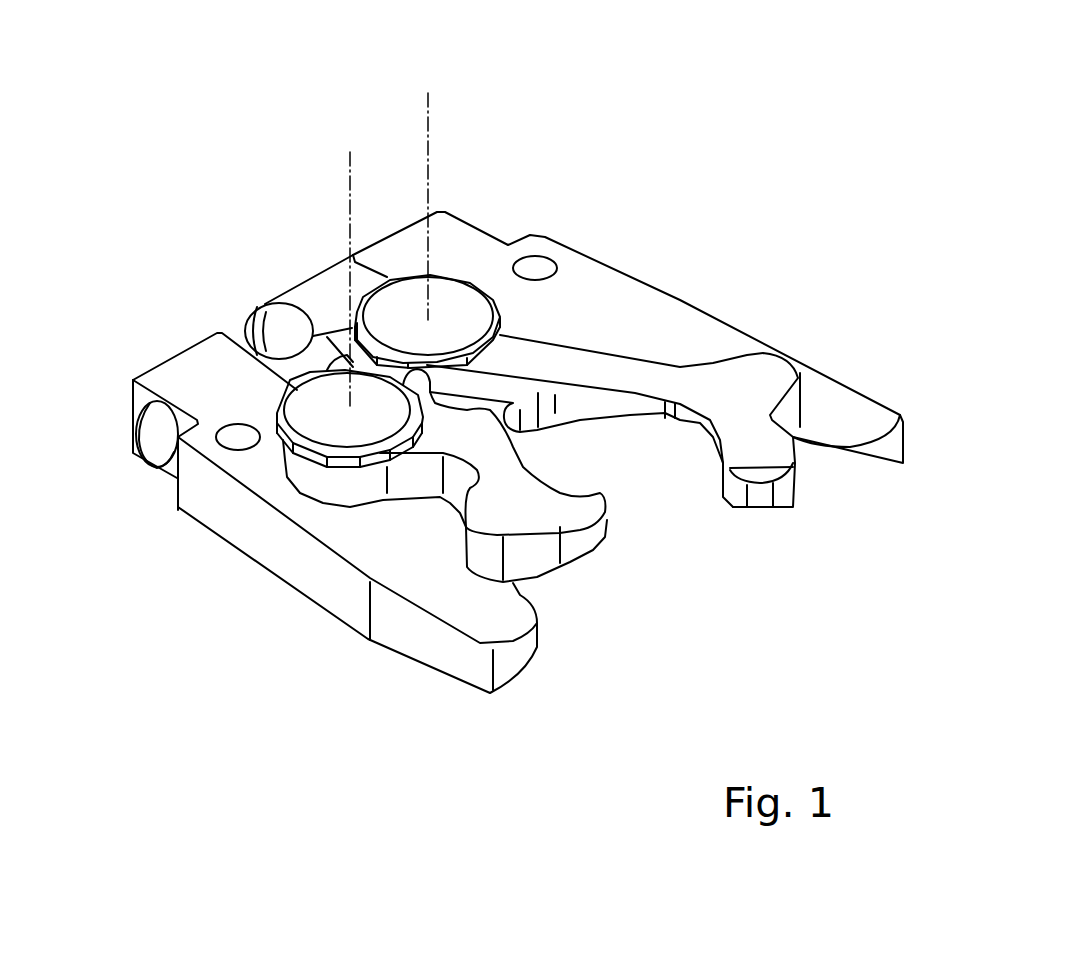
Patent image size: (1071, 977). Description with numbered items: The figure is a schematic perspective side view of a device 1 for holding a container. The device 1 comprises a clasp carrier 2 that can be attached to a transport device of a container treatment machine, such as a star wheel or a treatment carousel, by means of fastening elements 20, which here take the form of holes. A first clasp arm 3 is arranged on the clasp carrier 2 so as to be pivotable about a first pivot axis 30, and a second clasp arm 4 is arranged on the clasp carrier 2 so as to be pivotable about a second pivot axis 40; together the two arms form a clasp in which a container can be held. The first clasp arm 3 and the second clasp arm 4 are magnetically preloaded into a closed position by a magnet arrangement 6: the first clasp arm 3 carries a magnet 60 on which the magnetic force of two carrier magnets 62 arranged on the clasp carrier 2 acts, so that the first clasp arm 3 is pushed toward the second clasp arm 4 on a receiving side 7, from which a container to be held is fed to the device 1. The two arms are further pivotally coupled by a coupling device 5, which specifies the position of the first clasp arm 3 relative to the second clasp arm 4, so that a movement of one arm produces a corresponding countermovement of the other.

The device 1 is at (683, 120).
The clasp carrier 2 is at (657, 313).
The first clasp arm 3 is at (777, 457).
The second clasp arm 4 is at (560, 507).
The coupling device 5 is at (320, 353).
The magnet arrangement 6 is at (167, 270).
The receiving side 7 is at (763, 630).
The fastening elements 20 is at (542, 267).
The first pivot axis 30 is at (430, 162).
The second pivot axis 40 is at (347, 158).
The magnet 60 is at (270, 333).
The carrier magnets 62 is at (465, 243).